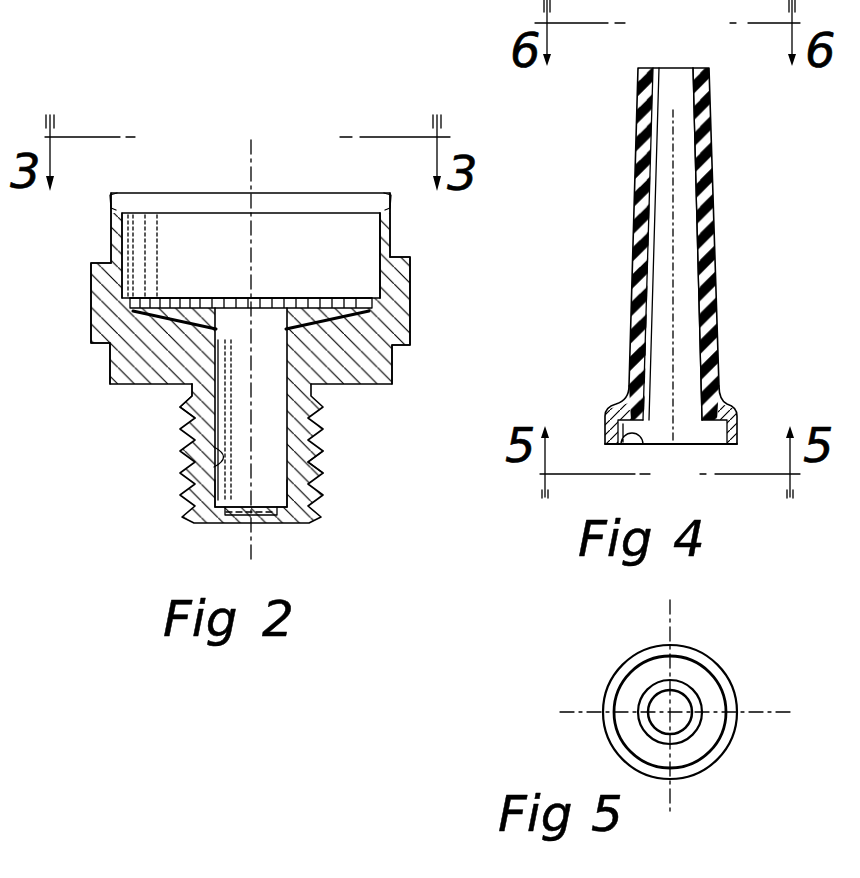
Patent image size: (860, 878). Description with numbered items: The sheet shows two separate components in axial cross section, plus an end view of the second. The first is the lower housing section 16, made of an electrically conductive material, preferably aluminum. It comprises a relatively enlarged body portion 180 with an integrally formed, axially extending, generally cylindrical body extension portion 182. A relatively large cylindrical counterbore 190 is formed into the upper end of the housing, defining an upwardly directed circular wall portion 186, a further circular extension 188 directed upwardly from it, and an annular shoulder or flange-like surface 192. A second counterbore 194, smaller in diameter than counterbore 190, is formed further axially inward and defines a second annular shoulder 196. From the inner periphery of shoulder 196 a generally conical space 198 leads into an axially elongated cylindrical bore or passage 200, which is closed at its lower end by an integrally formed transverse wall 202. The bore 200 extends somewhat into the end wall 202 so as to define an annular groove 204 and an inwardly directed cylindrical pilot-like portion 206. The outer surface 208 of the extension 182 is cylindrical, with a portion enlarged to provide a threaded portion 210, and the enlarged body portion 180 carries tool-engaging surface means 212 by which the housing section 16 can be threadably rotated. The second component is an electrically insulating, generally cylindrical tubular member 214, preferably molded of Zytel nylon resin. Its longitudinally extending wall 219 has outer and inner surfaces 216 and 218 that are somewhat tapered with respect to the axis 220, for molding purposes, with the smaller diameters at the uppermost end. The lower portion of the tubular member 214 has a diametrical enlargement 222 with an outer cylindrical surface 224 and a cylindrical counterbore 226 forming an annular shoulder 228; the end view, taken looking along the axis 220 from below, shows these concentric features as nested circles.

In FIG. 2, the lower housing section 16 is at (310, 170).
In FIG. 2, the enlarged body portion 180 is at (366, 338).
In FIG. 2, the body extension portion 182 is at (293, 445).
In FIG. 2, the circular wall portion 186 is at (395, 235).
In FIG. 2, the circular extension 188 is at (112, 197).
In FIG. 2, the counterbore 190 is at (123, 242).
In FIG. 2, the annular shoulder 192 is at (378, 278).
In FIG. 2, the second counterbore 194 is at (150, 298).
In FIG. 2, the second annular shoulder 196 is at (357, 297).
In FIG. 2, the conical space 198 is at (335, 312).
In FIG. 2, the cylindrical bore 200 is at (212, 452).
In FIG. 2, the transverse wall 202 is at (263, 513).
In FIG. 2, the annular groove 204 is at (213, 496).
In FIG. 2, the pilot-like portion 206 is at (258, 507).
In FIG. 2, the outer surface 208 is at (190, 390).
In FIG. 2, the threaded portion 210 is at (317, 473).
In FIG. 2, the tool-engaging surface means 212 is at (413, 297).
In FIG. 4, the tubular member 214 is at (735, 195).
In FIG. 5, the tubular member 214 is at (730, 653).
In FIG. 4, the outer surface 216 is at (714, 148).
In FIG. 4, the inner surface 218 is at (688, 262).
In FIG. 4, the longitudinally extending wall 219 is at (658, 44).
In FIG. 4, the axis 220 is at (673, 298).
In FIG. 4, the diametrical enlargement 222 is at (727, 413).
In FIG. 4, the outer cylindrical surface 224 is at (604, 424).
In FIG. 5, the outer cylindrical surface 224 is at (622, 666).
In FIG. 4, the cylindrical counterbore 226 is at (633, 436).
In FIG. 5, the cylindrical counterbore 226 is at (630, 733).
In FIG. 4, the annular shoulder 228 is at (706, 436).
In FIG. 5, the annular shoulder 228 is at (705, 733).